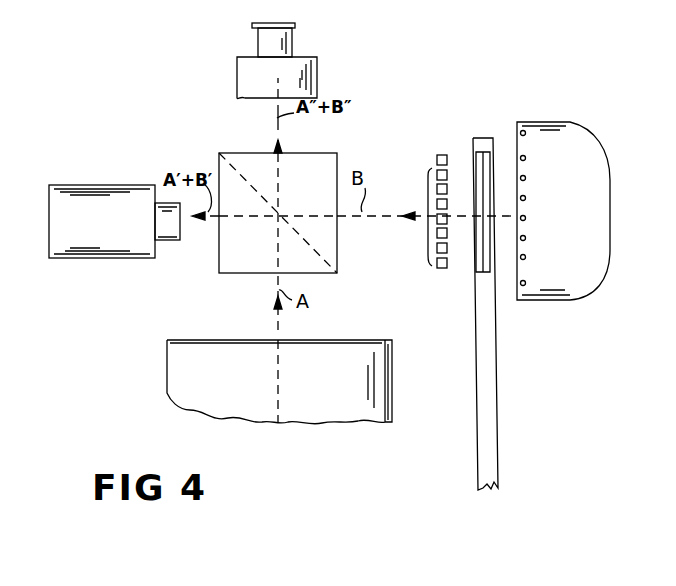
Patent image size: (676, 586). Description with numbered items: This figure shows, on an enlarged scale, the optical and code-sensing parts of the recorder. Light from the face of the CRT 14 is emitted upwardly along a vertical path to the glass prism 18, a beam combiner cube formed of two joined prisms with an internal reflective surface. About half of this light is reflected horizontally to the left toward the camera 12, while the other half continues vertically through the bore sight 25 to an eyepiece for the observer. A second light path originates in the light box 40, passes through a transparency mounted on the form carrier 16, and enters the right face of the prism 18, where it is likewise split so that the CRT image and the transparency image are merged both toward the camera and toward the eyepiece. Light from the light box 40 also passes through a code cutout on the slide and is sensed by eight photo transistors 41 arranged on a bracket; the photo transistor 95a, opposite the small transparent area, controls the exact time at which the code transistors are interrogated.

The camera 12 is at (92, 185).
The CRT 14 is at (167, 366).
The glass prism 18 is at (337, 153).
The bore sight 25 is at (317, 64).
The form carrier 16 is at (476, 140).
The light box 40 is at (598, 283).
The photo transistors 41 is at (428, 206).
The photo transistor 95a is at (441, 155).